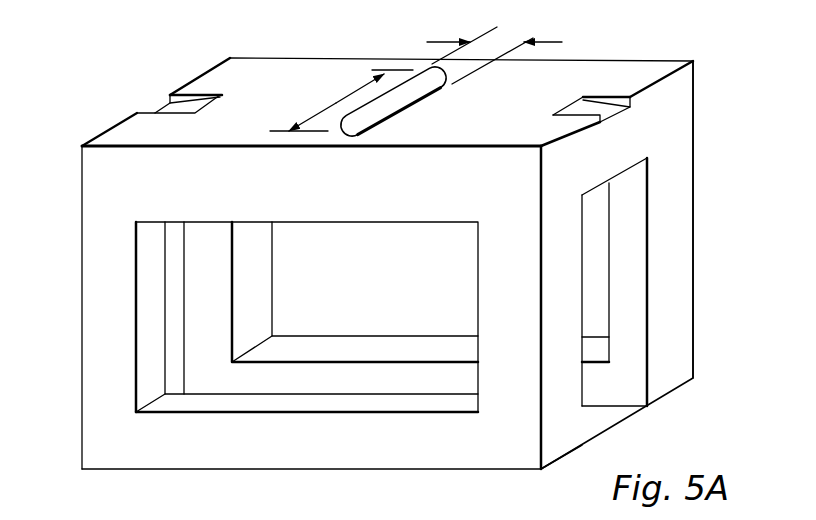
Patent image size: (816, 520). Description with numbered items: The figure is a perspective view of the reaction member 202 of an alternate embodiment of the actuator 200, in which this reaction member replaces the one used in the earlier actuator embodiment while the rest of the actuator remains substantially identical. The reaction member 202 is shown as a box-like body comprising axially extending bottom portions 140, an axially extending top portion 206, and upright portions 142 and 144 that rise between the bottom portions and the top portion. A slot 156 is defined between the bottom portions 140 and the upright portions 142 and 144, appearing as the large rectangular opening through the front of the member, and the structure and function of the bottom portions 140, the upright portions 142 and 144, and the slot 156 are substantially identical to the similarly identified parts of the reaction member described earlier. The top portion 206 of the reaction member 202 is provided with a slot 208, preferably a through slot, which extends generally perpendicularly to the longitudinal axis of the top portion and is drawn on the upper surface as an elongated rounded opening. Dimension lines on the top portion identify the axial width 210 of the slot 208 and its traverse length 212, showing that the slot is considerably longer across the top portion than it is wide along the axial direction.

The actuator 200 is at (710, 100).
The reaction member 202 is at (703, 252).
The top portion 206 is at (412, 203).
The slot 208 is at (398, 105).
The axial width 210 is at (502, 40).
The traverse length 212 is at (330, 103).
The bottom portions 140 is at (143, 455).
The upright portion 142 is at (675, 316).
The upright portion 144 is at (200, 323).
The slot 156 is at (143, 355).